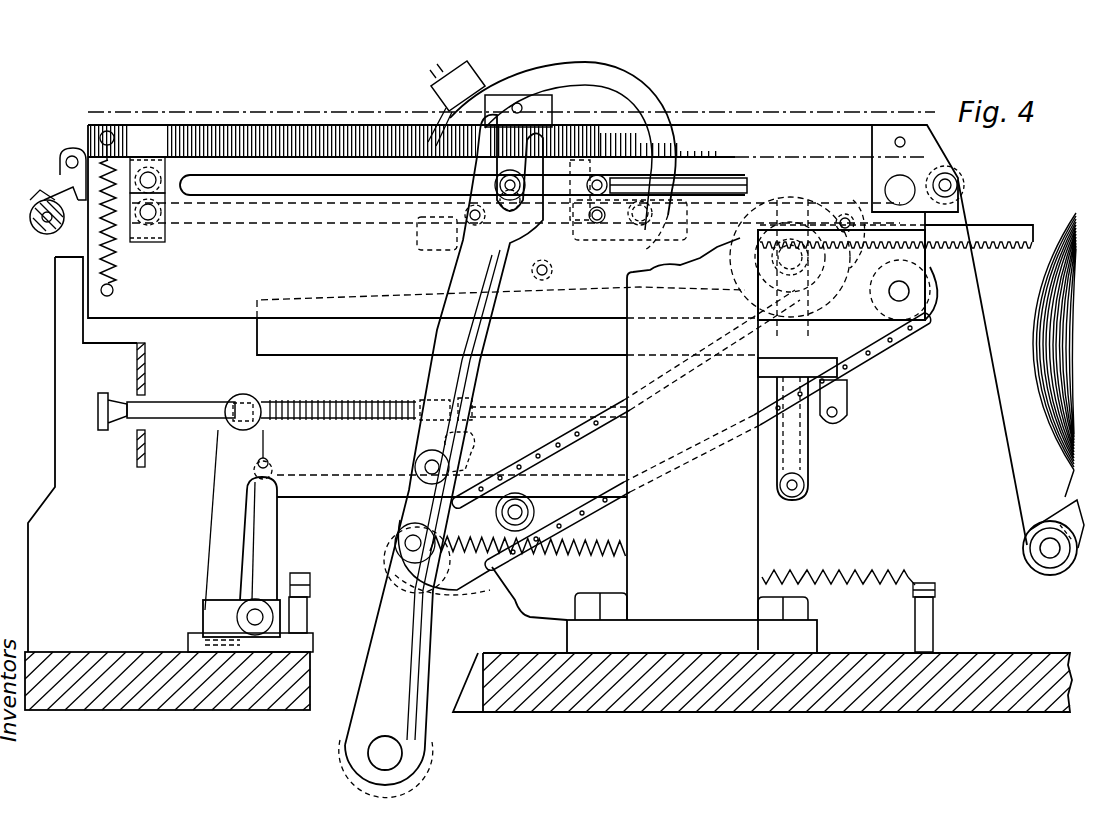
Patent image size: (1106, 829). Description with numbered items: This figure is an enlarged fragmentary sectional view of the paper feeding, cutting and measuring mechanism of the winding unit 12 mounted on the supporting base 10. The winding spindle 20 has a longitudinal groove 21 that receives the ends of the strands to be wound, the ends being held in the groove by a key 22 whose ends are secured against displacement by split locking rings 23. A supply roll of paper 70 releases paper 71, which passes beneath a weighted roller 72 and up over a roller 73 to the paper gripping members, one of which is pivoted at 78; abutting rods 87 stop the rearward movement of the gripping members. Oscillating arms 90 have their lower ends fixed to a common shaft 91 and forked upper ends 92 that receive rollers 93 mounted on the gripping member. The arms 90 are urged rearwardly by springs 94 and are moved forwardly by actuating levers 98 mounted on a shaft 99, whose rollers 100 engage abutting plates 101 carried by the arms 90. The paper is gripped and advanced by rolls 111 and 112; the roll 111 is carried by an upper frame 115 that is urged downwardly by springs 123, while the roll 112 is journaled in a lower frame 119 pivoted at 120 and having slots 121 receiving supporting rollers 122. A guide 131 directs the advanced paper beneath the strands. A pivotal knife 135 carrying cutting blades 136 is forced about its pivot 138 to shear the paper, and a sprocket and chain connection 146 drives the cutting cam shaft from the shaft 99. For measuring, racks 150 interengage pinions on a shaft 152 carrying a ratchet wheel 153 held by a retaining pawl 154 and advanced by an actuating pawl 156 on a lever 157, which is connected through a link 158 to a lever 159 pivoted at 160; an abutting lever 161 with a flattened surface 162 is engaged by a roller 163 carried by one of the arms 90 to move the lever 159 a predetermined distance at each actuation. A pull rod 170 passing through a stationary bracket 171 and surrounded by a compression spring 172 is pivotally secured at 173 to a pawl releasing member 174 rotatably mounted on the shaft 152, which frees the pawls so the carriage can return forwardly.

The supporting base 10 is at (75, 651).
The winding unit 12 is at (188, 110).
The winding spindle 20 is at (30, 205).
The longitudinally extending groove 21 is at (58, 228).
The key 22 is at (45, 235).
The split locking rings 23 is at (38, 205).
The supply roll of paper 70 is at (1058, 300).
The paper 71 is at (993, 378).
The weighted roller 72 is at (1035, 567).
The roller 73 is at (958, 187).
The pivot 78 is at (600, 175).
The abutting rods 87 is at (680, 178).
The oscillating arms 90 is at (437, 383).
The common shaft 91 is at (390, 740).
The fork 92 is at (548, 125).
The rollers 93 is at (496, 185).
The springs 94 is at (826, 572).
The actuating levers 98 is at (566, 532).
The shaft 99 is at (442, 565).
The rollers 100 is at (535, 508).
The abutting plates 101 is at (465, 458).
The gripping and advancing roll 111 is at (186, 178).
The gripping and advancing roll 112 is at (168, 210).
The upper frame 115 is at (255, 135).
The lower frame 119 is at (172, 318).
The pivot 120 is at (909, 291).
The longitudinally extending slots 121 is at (268, 222).
The supporting rollers 122 is at (445, 240).
The springs 123 is at (118, 252).
The guide 131 is at (62, 150).
The pivotal knife 135 is at (652, 102).
The cutting blades 136 is at (440, 112).
The pivot 138 is at (643, 264).
The sprocket and chain connection 146 is at (615, 508).
The racks 150 is at (990, 224).
The shaft 152 is at (790, 205).
The ratchet wheel 153 is at (755, 258).
The retaining pawl 154 is at (853, 215).
The actuating pawl 156 is at (740, 302).
The lever 157 is at (808, 450).
The link 158 is at (317, 495).
The lever 159 is at (247, 525).
The pivot 160 is at (247, 617).
The abutting lever 161 is at (255, 466).
The flattened surface 162 is at (272, 463).
The roller 163 is at (414, 467).
The pull rod 170 is at (110, 392).
The stationary bracket 171 is at (237, 447).
The compression spring 172 is at (290, 400).
The pivot 173 is at (838, 406).
The pawl releasing member 174 is at (823, 391).